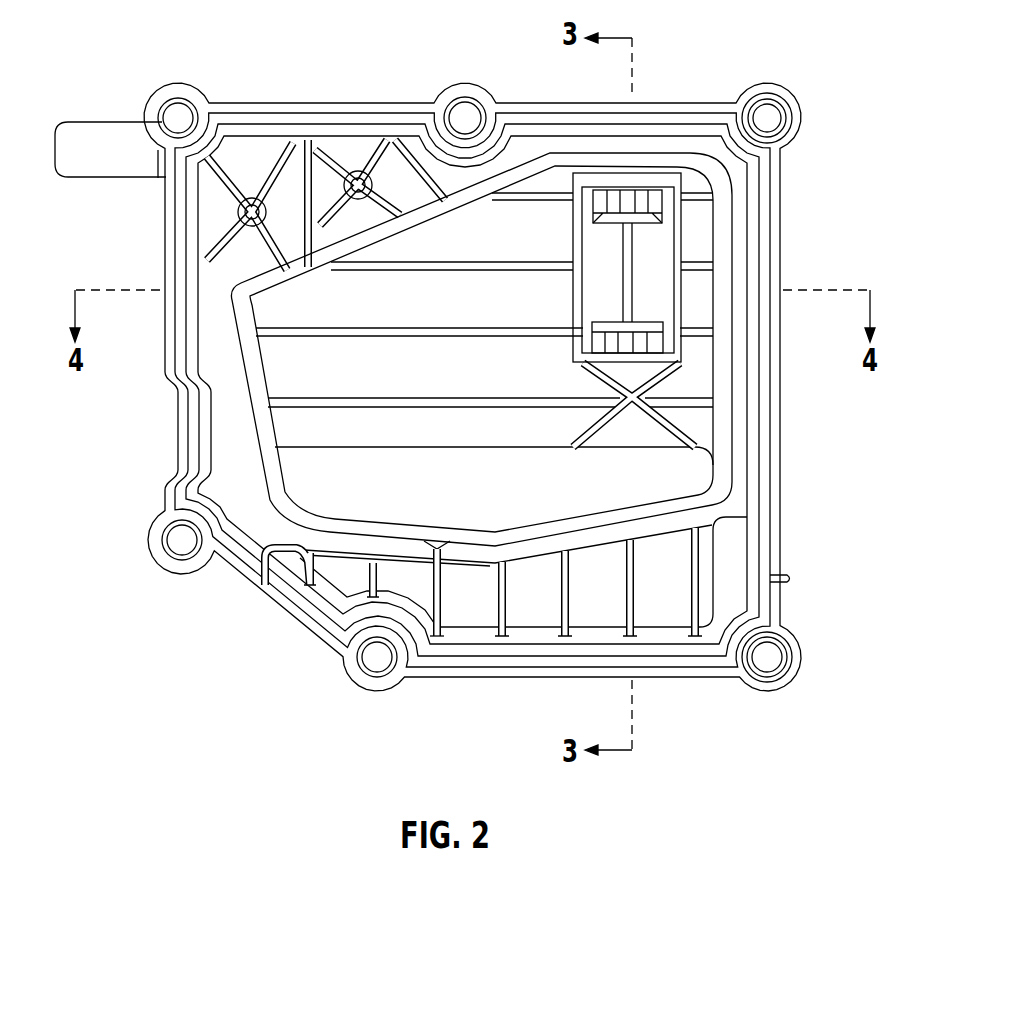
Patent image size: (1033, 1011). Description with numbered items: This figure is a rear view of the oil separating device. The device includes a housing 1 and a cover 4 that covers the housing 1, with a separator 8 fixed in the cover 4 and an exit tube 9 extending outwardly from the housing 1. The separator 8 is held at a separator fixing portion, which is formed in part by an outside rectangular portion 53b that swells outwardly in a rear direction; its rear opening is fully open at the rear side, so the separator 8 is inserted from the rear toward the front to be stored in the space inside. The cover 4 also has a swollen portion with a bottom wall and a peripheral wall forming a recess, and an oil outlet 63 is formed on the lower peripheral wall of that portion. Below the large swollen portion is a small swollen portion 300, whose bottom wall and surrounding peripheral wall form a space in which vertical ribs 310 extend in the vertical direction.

The housing 1 is at (347, 587).
The cover 4 is at (685, 472).
The separator 8 is at (696, 202).
The exit tube 9 is at (88, 132).
The outside rectangular portion 53b is at (648, 187).
The oil outlet 63 is at (440, 548).
The small swollen portion 300 is at (715, 570).
The vertical ribs 310 is at (633, 598).